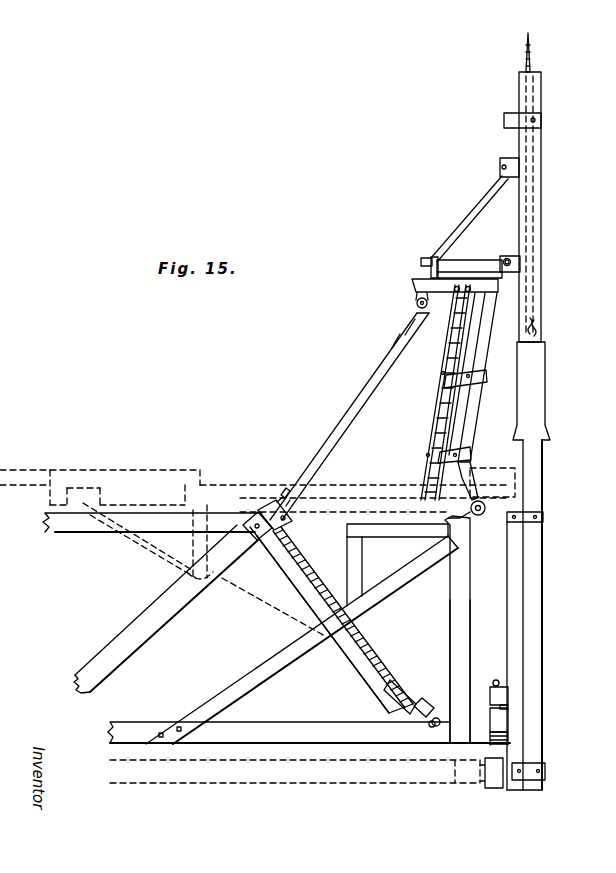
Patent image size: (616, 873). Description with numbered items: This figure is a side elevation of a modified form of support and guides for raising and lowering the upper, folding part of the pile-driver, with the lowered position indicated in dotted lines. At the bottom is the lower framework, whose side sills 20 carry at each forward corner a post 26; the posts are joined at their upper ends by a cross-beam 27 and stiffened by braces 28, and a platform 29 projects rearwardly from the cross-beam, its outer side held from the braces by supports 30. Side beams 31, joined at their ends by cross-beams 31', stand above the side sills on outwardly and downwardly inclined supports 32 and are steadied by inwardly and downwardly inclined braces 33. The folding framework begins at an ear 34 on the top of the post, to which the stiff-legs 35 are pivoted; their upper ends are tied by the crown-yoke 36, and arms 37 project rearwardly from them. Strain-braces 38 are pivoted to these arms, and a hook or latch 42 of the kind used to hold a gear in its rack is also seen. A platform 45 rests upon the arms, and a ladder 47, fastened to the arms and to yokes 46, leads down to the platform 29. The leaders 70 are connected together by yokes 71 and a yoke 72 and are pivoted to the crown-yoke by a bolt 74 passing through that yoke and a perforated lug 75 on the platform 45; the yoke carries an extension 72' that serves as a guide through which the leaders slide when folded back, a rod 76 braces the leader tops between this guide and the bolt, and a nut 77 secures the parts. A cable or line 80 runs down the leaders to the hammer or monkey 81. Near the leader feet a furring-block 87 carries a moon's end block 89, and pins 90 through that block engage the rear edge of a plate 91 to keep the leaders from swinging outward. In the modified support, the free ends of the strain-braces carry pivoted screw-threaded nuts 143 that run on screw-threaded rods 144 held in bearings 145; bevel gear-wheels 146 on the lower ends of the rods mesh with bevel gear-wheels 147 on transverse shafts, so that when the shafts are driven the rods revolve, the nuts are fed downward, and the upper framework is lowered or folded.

The side sills 20 is at (287, 734).
The posts 26 is at (466, 608).
The cross-beam 27 is at (468, 540).
The braces 28 is at (394, 592).
The platform 29 is at (391, 537).
The supports 30 is at (348, 555).
The side beams 31 is at (152, 538).
The cross-beams 31' is at (282, 485).
The inclined supports 32 is at (349, 676).
The braces 33 is at (134, 640).
The ear 34 is at (469, 498).
The stiff-legs 35 is at (473, 402).
The crown-yoke 36 is at (507, 262).
The arms 37 is at (441, 293).
The strain-braces 38 is at (362, 425).
The hook or latch 42 is at (252, 541).
The platform 45 is at (452, 282).
The yokes 46 is at (445, 376).
The ladder 47 is at (450, 356).
The leaders 70 is at (539, 486).
The yokes 71 is at (542, 118).
The yoke 72 is at (538, 266).
The extension 72' is at (284, 351).
The bolt 74 is at (490, 260).
The perforated lug 75 is at (431, 272).
The rod 76 is at (478, 204).
The nut 77 is at (421, 262).
The cable or line 80 is at (530, 68).
The hammer or monkey 81 is at (552, 422).
The furring-block 87 is at (522, 657).
The moon's end block 89 is at (508, 697).
The pins 90 is at (491, 675).
The plate 91 is at (508, 709).
The screw-threaded nuts 143 is at (292, 502).
The screw-threaded rods 144 is at (297, 561).
The bearings 145 is at (290, 487).
The bevel gear-wheels 146 is at (438, 727).
The bevel gear-wheels 147 is at (445, 795).